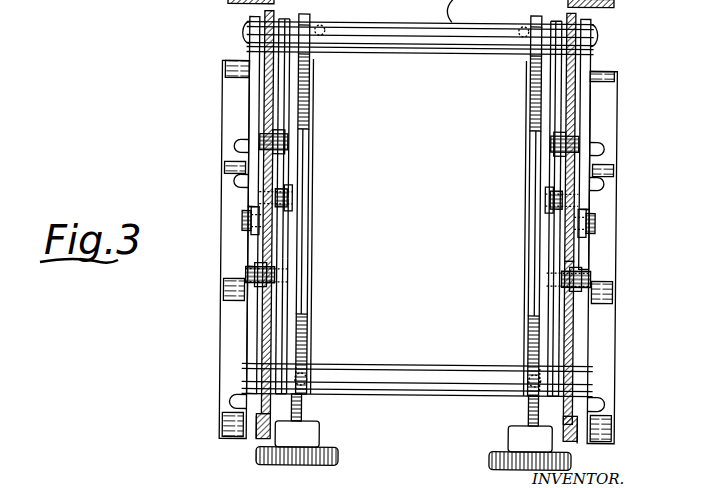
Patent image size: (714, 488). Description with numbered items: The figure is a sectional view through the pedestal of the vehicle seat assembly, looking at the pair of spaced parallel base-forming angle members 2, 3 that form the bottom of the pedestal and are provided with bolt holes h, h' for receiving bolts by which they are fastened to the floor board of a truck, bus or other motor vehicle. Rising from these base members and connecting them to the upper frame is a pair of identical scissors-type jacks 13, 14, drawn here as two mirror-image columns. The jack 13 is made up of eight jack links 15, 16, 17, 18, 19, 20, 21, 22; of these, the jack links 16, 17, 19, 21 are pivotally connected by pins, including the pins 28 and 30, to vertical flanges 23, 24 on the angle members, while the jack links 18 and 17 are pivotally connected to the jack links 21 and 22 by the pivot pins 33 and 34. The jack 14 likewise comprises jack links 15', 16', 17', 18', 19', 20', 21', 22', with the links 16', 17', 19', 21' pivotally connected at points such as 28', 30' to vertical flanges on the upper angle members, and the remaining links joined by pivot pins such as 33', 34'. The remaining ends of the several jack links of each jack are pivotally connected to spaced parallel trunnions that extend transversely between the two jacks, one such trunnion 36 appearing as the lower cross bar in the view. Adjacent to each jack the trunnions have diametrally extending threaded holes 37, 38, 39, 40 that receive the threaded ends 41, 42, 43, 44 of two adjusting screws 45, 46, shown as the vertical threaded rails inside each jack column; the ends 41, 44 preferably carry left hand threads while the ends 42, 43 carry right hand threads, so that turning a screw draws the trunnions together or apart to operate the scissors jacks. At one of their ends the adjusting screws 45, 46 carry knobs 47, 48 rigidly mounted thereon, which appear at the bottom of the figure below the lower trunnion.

The base-forming angle member 2 is at (221, 354).
The base-forming angle member 3 is at (600, 334).
The scissors-type jack 13 is at (598, 62).
The scissors-type jack 14 is at (238, 72).
The jack link 15 is at (606, 209).
The jack link 15' is at (232, 206).
The jack link 16 is at (597, 339).
The jack link 16' is at (221, 330).
The jack link 17 is at (601, 151).
The jack link 17' is at (310, 327).
The jack link 18 is at (526, 343).
The jack link 18' is at (299, 213).
The jack link 19 is at (534, 182).
The jack link 19' is at (222, 189).
The jack link 20 is at (536, 114).
The jack link 20' is at (217, 111).
The jack link 21 is at (592, 137).
The jack link 21' is at (313, 109).
The jack link 22 is at (617, 93).
The jack link 22' is at (316, 186).
The vertical flange 23 is at (600, 434).
The vertical flange 24 is at (258, 416).
The pin 28 is at (531, 149).
The pivotal connection 28' is at (305, 147).
The pin 30 is at (535, 271).
The pivotal connection 30' is at (297, 265).
The pivot pin 33 is at (538, 225).
The pivot pin 33' is at (221, 222).
The pivot pin 34 is at (598, 202).
The pivot pin 34' is at (304, 195).
The trunnion 36 is at (418, 371).
The threaded hole 37 is at (312, 372).
The threaded hole 38 is at (322, 29).
The threaded hole 39 is at (528, 29).
The threaded hole 40 is at (526, 378).
The threaded end 41 is at (305, 334).
The threaded end 42 is at (310, 78).
The threaded end 43 is at (528, 78).
The threaded end 44 is at (530, 336).
The adjusting screw 45 is at (309, 230).
The adjusting screw 46 is at (528, 186).
The knob 47 is at (300, 458).
The knob 48 is at (491, 461).
The bolt hole h is at (618, 172).
The bolt hole h' is at (412, 278).